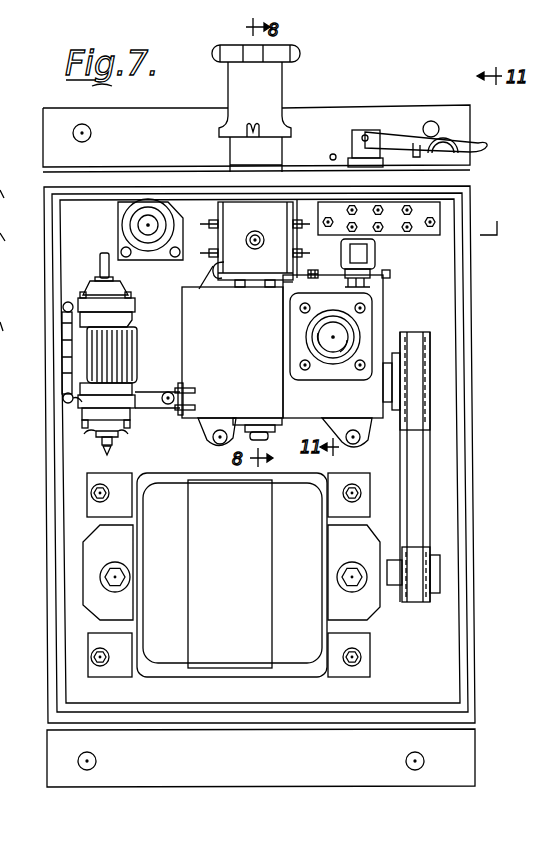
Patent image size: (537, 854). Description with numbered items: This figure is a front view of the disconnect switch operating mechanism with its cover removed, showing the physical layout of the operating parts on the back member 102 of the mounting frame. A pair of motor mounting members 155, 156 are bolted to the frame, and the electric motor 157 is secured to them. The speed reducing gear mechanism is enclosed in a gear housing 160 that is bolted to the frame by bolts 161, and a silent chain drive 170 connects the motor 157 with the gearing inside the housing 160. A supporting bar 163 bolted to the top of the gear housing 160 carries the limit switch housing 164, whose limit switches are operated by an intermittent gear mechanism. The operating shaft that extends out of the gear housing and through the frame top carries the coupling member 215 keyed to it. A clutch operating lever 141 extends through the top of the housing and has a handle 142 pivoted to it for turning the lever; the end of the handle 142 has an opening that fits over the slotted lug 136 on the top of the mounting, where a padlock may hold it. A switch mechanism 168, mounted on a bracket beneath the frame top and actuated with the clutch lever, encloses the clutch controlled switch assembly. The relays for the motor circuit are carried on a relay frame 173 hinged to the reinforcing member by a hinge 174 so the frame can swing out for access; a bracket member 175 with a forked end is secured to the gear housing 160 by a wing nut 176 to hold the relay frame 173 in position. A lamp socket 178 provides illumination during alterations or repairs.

The back member 102 is at (88, 247).
The lug 136 is at (425, 128).
The clutch operating lever 141 is at (352, 158).
The handle 142 is at (415, 147).
The motor mounting member 155 is at (118, 485).
The motor mounting member 156 is at (121, 666).
The electric motor 157 is at (227, 591).
The gear housing 160 is at (268, 397).
The bolts 161 is at (214, 443).
The supporting bar 163 is at (291, 283).
The limit switch housing 164 is at (234, 264).
The switch mechanism 168 is at (424, 236).
The silent chain drive 170 is at (428, 474).
The relay frame 173 is at (66, 402).
The hinge 174 is at (64, 355).
The bracket member 175 is at (148, 392).
The wing nut 176 is at (181, 412).
The lamp socket 178 is at (125, 222).
The coupling member 215 is at (330, 340).